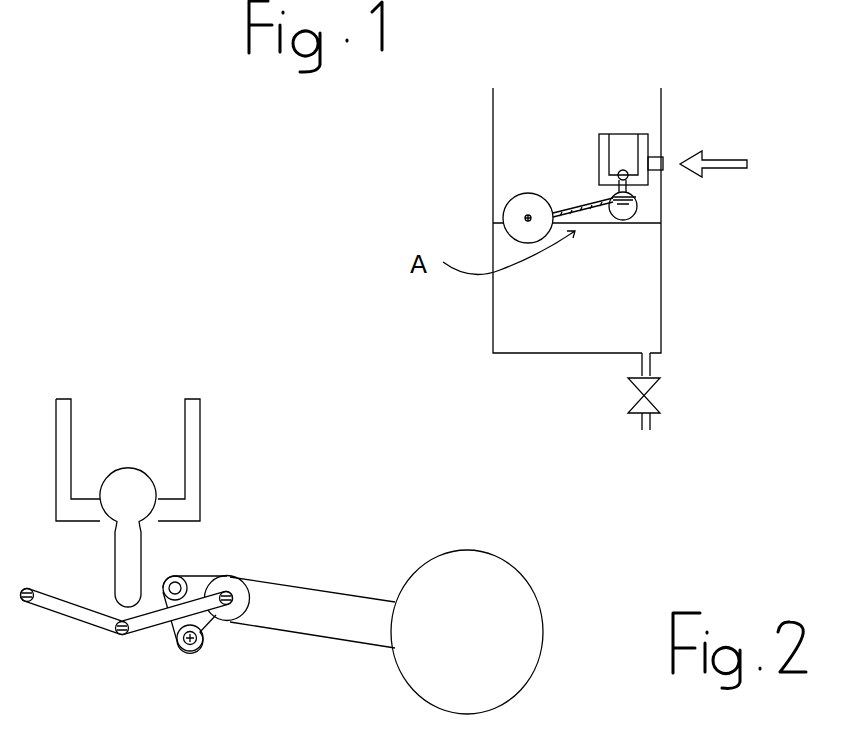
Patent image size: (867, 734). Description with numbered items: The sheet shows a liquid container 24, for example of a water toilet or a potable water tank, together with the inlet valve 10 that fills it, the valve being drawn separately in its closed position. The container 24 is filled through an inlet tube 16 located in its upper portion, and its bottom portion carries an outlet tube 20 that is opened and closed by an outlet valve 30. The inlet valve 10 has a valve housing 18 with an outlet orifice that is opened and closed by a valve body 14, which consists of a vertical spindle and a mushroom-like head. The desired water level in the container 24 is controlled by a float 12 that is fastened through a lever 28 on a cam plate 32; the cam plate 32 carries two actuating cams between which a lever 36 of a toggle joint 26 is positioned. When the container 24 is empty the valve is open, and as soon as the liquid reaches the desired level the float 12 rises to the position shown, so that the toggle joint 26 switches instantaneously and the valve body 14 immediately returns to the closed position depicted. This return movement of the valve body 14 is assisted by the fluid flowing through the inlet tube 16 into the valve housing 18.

In FIG. 1, the inlet valve 10 is at (632, 134).
In FIG. 2, the inlet valve 10 is at (132, 393).
In FIG. 1, the float 12 is at (515, 203).
In FIG. 2, the float 12 is at (468, 585).
In FIG. 2, the valve body 14 is at (128, 503).
In FIG. 1, the inlet tube 16 is at (663, 160).
In FIG. 1, the valve housing 18 is at (599, 150).
In FIG. 2, the valve housing 18 is at (191, 474).
In FIG. 1, the outlet tube 20 is at (650, 365).
In FIG. 1, the liquid container 24 is at (662, 292).
In FIG. 1, the toggle joint 26 is at (637, 207).
In FIG. 2, the toggle joint 26 is at (105, 626).
In FIG. 2, the lever 28 is at (325, 617).
In FIG. 1, the outlet valve 30 is at (643, 392).
In FIG. 2, the cam plate 32 is at (211, 627).
In FIG. 2, the lever 36 is at (153, 621).